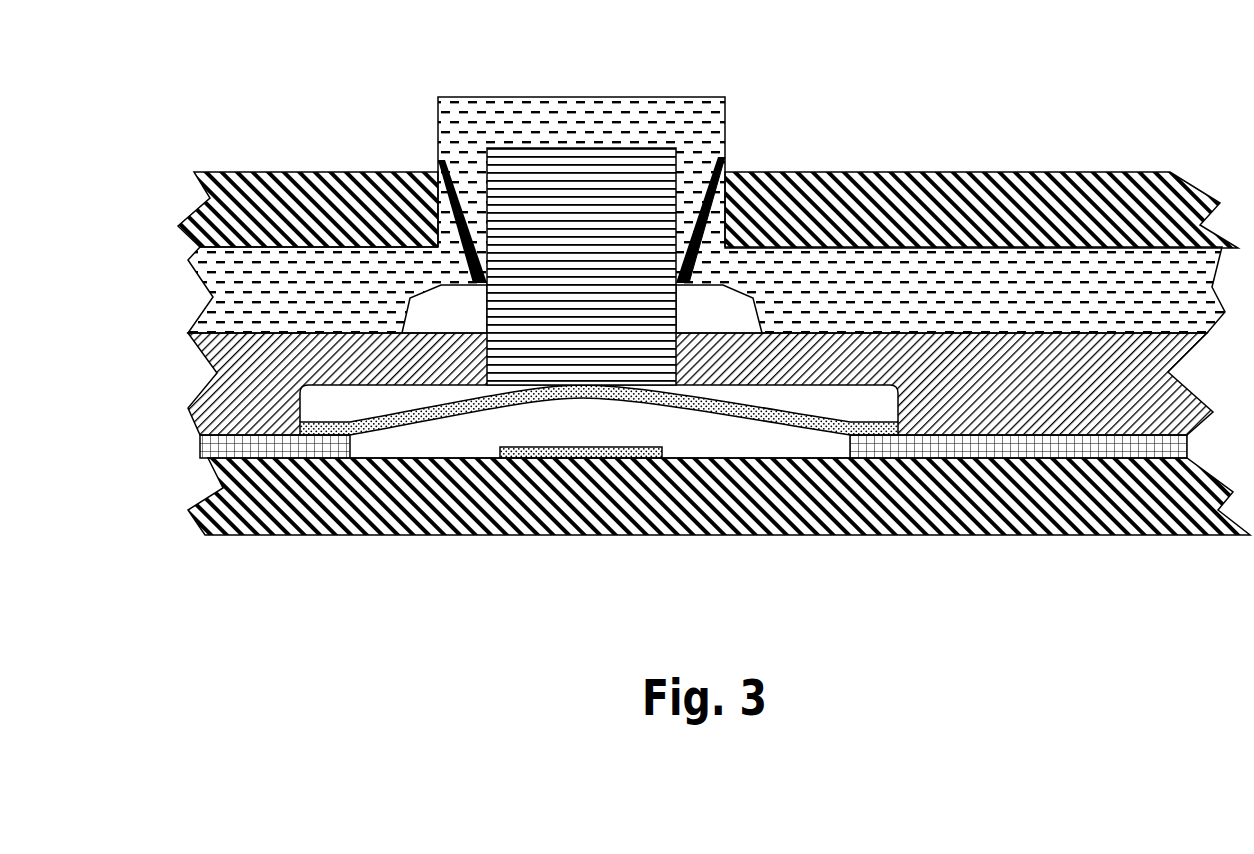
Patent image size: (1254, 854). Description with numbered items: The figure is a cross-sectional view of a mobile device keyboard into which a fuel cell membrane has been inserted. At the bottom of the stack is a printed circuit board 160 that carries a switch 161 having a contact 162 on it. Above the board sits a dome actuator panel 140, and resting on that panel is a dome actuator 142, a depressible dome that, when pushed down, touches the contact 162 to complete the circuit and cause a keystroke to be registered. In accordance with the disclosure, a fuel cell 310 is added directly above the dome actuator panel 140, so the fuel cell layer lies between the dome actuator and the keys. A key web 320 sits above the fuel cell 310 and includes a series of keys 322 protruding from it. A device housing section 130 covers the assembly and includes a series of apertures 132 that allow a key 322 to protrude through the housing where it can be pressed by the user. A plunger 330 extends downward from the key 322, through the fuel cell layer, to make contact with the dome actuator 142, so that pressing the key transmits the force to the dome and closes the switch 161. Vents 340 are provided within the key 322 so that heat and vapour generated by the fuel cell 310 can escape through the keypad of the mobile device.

The device housing section 130 is at (210, 200).
The aperture 132 is at (733, 160).
The dome actuator panel 140 is at (200, 445).
The dome actuator 142 is at (697, 412).
The printed circuit board 160 is at (207, 503).
The switch 161 is at (490, 445).
The contact 162 is at (627, 450).
The fuel cell 310 is at (217, 373).
The key web 320 is at (213, 297).
The key 322 is at (438, 117).
The plunger 330 is at (585, 162).
The vent 340 is at (440, 160).